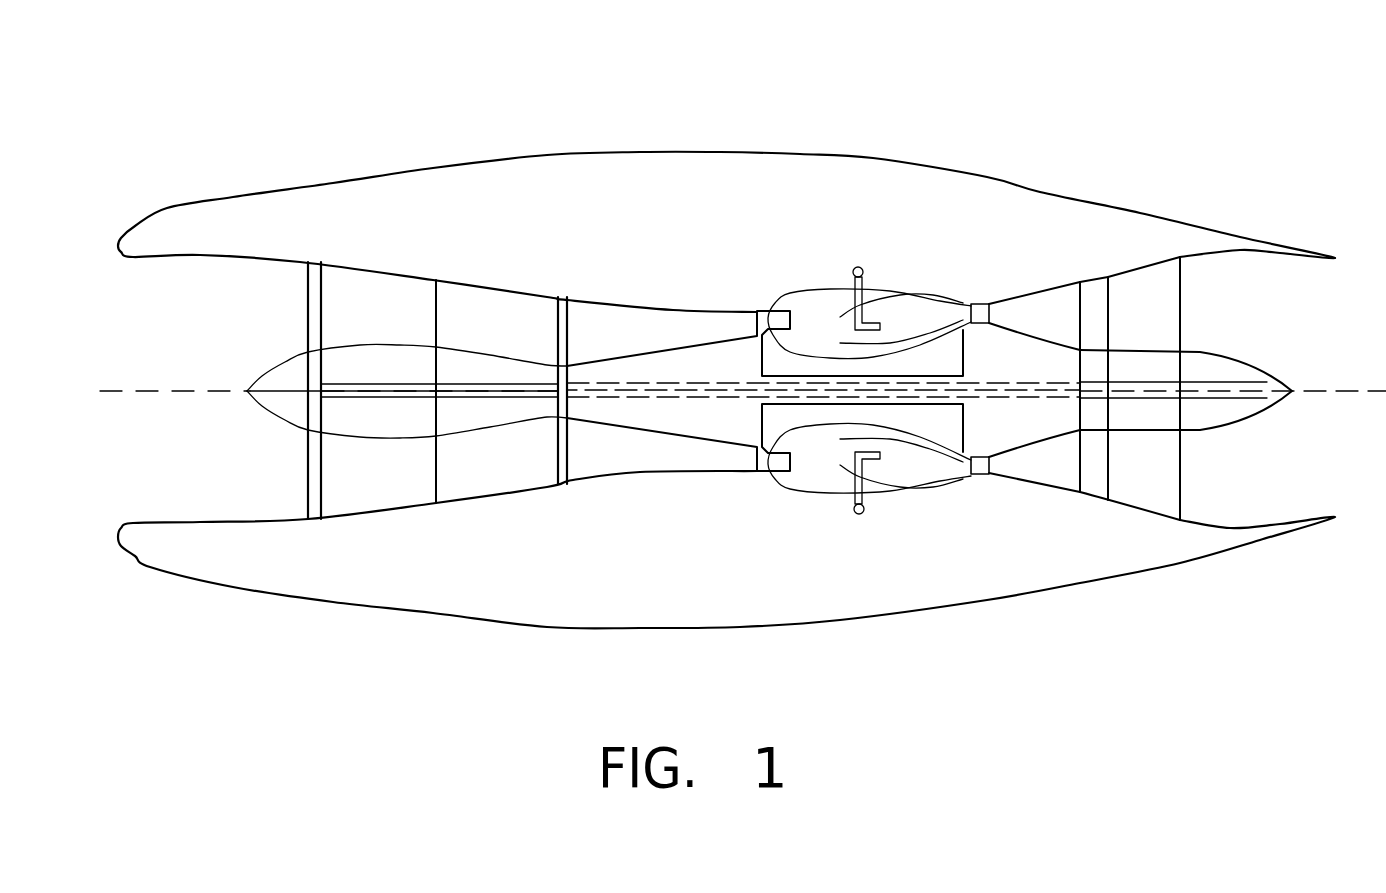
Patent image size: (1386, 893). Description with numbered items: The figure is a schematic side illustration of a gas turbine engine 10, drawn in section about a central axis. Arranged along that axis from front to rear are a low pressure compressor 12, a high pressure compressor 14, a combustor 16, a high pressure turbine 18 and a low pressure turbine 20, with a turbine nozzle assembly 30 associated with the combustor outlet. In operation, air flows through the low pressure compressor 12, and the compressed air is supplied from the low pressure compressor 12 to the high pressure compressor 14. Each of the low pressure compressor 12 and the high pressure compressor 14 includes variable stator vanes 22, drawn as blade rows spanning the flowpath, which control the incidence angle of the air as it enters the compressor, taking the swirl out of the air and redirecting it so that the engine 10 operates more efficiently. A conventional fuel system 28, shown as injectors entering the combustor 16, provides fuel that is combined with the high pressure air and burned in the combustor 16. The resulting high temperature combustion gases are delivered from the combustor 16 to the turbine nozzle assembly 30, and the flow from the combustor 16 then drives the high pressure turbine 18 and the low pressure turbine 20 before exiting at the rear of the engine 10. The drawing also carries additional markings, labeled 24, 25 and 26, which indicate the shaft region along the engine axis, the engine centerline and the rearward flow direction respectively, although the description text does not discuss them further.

The gas turbine engine 10 is at (325, 98).
The low pressure compressor 12 is at (368, 328).
The high pressure compressor 14 is at (632, 330).
The combustor 16 is at (907, 460).
The high pressure turbine 18 is at (1027, 310).
The low pressure turbine 20 is at (1127, 295).
The variable stator vanes 22 is at (310, 262).
The shaft 24 is at (362, 398).
The longitudinal centerline axis 25 is at (190, 390).
The downstream flow direction 26 is at (1303, 485).
The fuel system 28 is at (855, 513).
The turbine nozzle assembly 30 is at (940, 300).